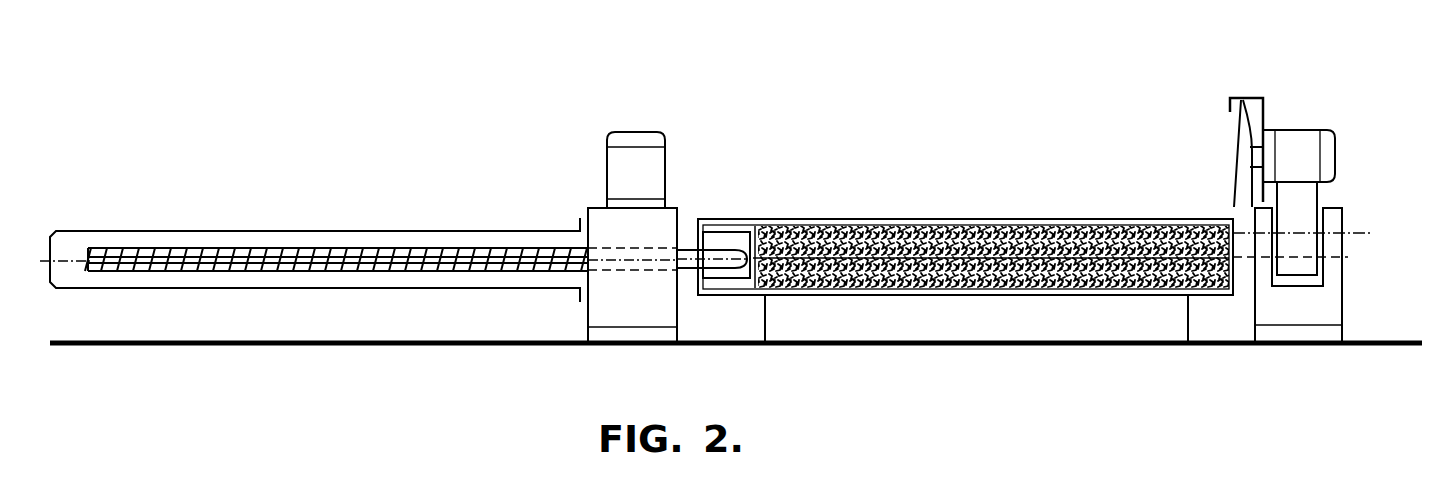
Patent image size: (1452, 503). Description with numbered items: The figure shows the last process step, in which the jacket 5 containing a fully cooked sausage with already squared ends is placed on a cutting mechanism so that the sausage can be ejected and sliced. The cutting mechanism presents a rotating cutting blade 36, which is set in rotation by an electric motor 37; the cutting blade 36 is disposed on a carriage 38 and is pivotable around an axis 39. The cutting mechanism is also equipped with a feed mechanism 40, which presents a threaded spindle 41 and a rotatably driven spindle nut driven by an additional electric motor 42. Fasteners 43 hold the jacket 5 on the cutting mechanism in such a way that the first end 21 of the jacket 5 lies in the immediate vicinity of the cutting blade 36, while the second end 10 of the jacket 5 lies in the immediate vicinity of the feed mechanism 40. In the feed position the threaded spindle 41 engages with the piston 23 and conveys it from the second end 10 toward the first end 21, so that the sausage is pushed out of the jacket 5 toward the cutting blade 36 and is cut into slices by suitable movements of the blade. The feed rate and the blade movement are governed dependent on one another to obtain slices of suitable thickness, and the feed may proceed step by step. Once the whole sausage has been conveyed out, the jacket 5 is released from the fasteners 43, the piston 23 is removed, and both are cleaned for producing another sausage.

The jacket 5 is at (890, 226).
The second end of the jacket 10 is at (721, 205).
The first end of the jacket 21 is at (1207, 305).
The piston 23 is at (758, 252).
The cutting blade 36 is at (1250, 96).
The electric motor 37 is at (1297, 145).
The carriage 38 is at (1322, 305).
The axis 39 is at (1359, 232).
The feed mechanism 40 is at (686, 144).
The threaded spindle 41 is at (350, 262).
The additional electric motor 42 is at (625, 170).
The fasteners 43 is at (1008, 318).